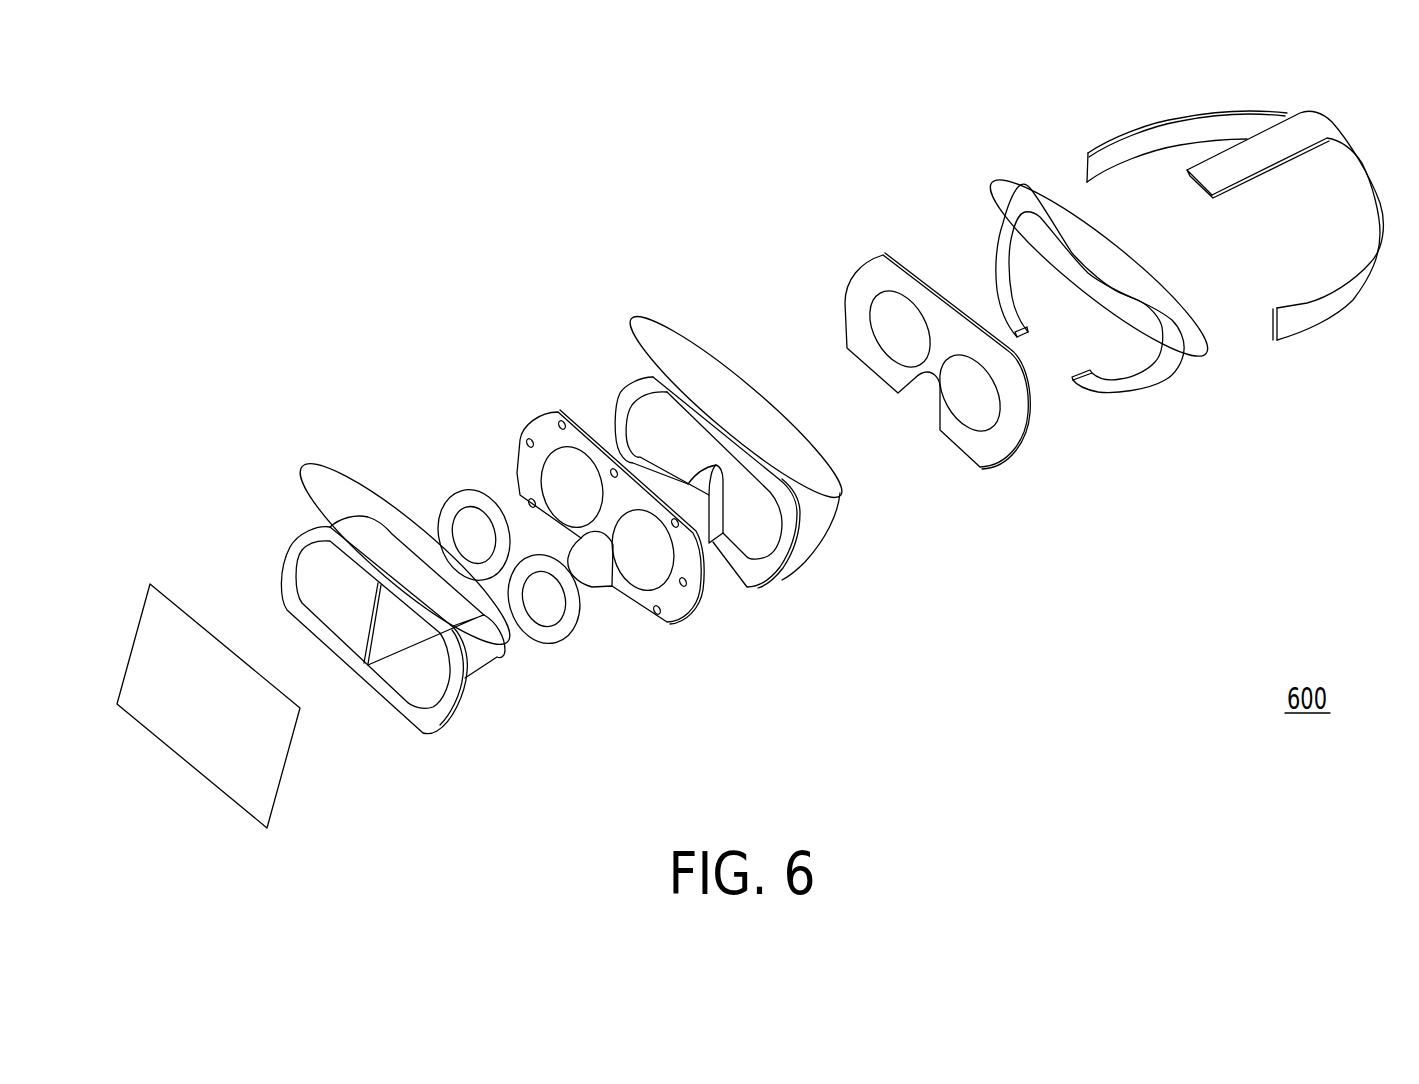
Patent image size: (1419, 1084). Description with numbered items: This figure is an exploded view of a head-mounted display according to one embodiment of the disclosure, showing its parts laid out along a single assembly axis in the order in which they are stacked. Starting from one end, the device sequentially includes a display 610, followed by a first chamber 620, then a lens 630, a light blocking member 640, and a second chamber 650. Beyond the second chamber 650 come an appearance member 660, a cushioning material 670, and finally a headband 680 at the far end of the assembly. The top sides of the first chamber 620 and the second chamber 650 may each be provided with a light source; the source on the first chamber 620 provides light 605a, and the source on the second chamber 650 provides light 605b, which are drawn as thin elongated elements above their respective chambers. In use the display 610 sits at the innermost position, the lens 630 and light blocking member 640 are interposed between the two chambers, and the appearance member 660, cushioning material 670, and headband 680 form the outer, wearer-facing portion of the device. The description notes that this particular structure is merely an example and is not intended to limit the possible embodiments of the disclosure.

The light 605a is at (319, 482).
The light 605b is at (662, 338).
The display 610 is at (288, 770).
The first chamber 620 is at (410, 680).
The lens 630 is at (565, 643).
The light blocking member 640 is at (688, 570).
The second chamber 650 is at (760, 552).
The appearance member 660 is at (993, 447).
The cushioning material 670 is at (1150, 387).
The headband 680 is at (1337, 290).